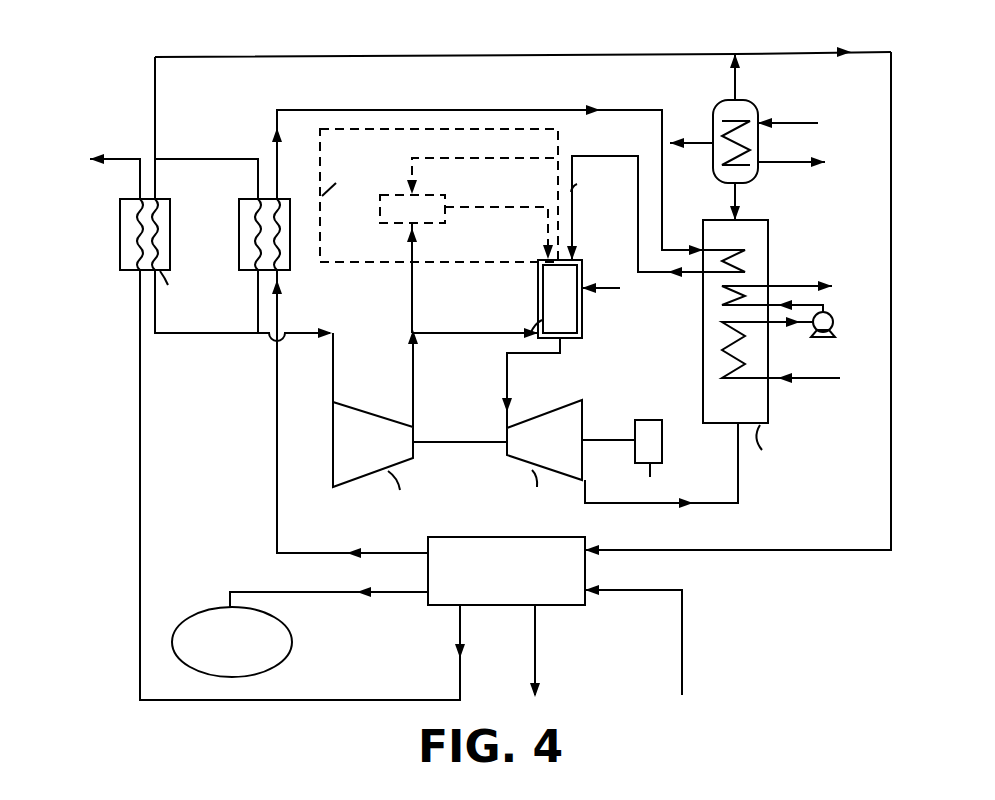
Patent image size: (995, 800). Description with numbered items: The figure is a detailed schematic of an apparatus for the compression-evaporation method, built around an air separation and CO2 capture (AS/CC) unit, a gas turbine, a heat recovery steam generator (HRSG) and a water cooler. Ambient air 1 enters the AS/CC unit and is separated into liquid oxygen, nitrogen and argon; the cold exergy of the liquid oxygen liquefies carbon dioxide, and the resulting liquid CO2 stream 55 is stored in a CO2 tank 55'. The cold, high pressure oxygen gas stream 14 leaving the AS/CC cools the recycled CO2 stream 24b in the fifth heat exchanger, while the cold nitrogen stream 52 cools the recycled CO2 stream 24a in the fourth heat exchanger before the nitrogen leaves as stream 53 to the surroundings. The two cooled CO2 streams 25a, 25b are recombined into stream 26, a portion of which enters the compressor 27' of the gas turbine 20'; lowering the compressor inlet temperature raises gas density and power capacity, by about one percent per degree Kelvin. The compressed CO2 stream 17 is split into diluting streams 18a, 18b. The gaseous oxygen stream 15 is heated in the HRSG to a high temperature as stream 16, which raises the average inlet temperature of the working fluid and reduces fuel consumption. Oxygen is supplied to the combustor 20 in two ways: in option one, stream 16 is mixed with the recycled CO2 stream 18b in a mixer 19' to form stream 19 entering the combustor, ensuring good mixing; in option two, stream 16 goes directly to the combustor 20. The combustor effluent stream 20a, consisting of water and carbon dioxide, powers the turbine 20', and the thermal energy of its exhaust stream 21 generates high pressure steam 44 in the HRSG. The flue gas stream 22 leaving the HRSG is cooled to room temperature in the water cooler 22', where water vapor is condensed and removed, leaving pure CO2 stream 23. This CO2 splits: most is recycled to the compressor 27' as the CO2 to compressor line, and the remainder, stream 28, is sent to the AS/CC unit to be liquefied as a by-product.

The ambient air 1 is at (682, 668).
The cold high pressure O2 gas stream 14 is at (376, 553).
The gaseous O2 stream 15 is at (280, 182).
The heated O2 stream 16 is at (461, 158).
The compressed CO2 stream 17 is at (434, 378).
The recycled CO2 diluting stream 18a is at (475, 314).
The recycled CO2 stream to mixer 18b is at (446, 278).
The O2/CO2 mixture stream 19 is at (506, 219).
The mixer 19' is at (431, 212).
The combustor 20 is at (536, 315).
The combustor effluent gas stream 20a is at (548, 383).
The gas turbine 20' is at (594, 460).
The exhaust gas stream 21 is at (612, 503).
The flue gas stream 22 is at (768, 201).
The water cooler 22' is at (768, 141).
The pure CO2 stream 23 is at (155, 107).
The recycled CO2 stream to HX4 24a is at (157, 176).
The recycled CO2 stream to HX5 24b is at (209, 161).
The cooled recycled CO2 stream from HX4 25a is at (166, 333).
The cooled recycled CO2 stream from HX5 25b is at (258, 323).
The recombined cooled CO2 stream 26 is at (334, 365).
The compressor 27' is at (420, 465).
The CO2 by-product stream 28 is at (870, 51).
The high pressure steam stream 44 is at (832, 288).
The cold N2 stream 52 is at (398, 699).
The N2 stream to surroundings 53 is at (120, 166).
The liquid CO2 stream 55 is at (329, 587).
The CO2 tank 55' is at (250, 642).